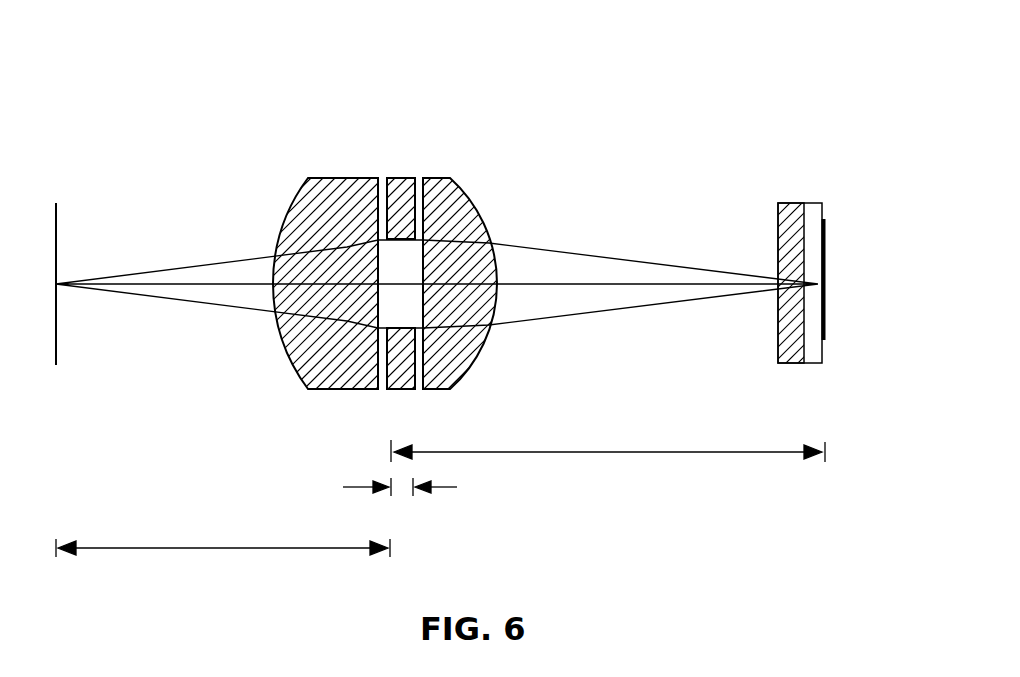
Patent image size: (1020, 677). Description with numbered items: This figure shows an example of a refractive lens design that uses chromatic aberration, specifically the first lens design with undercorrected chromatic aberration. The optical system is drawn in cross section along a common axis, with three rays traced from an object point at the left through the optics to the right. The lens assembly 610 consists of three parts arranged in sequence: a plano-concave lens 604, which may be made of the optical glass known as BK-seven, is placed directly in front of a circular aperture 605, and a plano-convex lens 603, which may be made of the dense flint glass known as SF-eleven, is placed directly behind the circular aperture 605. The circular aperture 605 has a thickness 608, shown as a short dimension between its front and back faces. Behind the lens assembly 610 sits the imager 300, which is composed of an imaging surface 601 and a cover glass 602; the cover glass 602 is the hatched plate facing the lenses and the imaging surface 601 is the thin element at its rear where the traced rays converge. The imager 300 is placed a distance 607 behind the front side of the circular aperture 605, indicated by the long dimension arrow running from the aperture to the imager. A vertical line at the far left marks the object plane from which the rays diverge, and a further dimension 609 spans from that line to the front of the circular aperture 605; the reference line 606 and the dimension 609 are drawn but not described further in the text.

The imager 300 is at (808, 273).
The imaging surface 601 is at (825, 310).
The cover glass 602 is at (787, 345).
The plano-convex lens 603 is at (440, 380).
The plano-concave lens 604 is at (344, 380).
The circular aperture 605 is at (403, 380).
The object plane 606 is at (56, 232).
The distance 607 is at (617, 452).
The thickness 608 is at (400, 501).
The object distance 609 is at (207, 548).
The lens assembly 610 is at (483, 187).